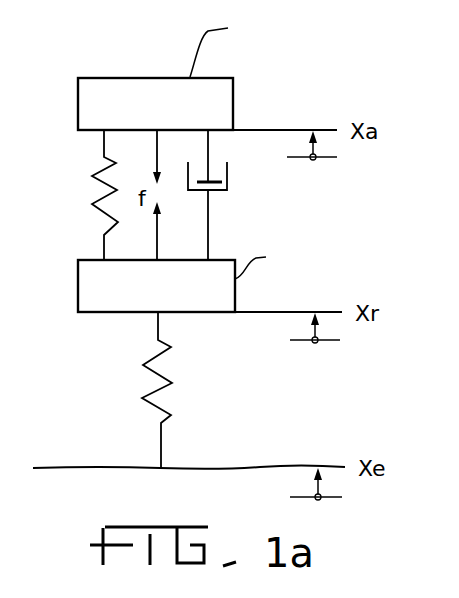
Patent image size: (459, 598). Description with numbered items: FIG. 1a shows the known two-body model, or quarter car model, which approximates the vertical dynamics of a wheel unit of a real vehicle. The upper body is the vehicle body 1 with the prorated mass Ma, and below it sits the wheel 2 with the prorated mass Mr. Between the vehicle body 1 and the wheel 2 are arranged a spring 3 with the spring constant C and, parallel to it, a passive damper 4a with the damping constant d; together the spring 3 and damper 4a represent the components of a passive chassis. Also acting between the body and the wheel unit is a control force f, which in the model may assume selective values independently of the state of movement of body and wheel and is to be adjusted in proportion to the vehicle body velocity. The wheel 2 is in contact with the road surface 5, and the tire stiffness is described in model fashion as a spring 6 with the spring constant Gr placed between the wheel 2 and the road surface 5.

The vehicle body 1 is at (87, 104).
The wheel 2 is at (90, 290).
The spring 3 is at (98, 175).
The passive damper 4a is at (228, 172).
The road surface 5 is at (59, 467).
The spring 6 is at (172, 404).